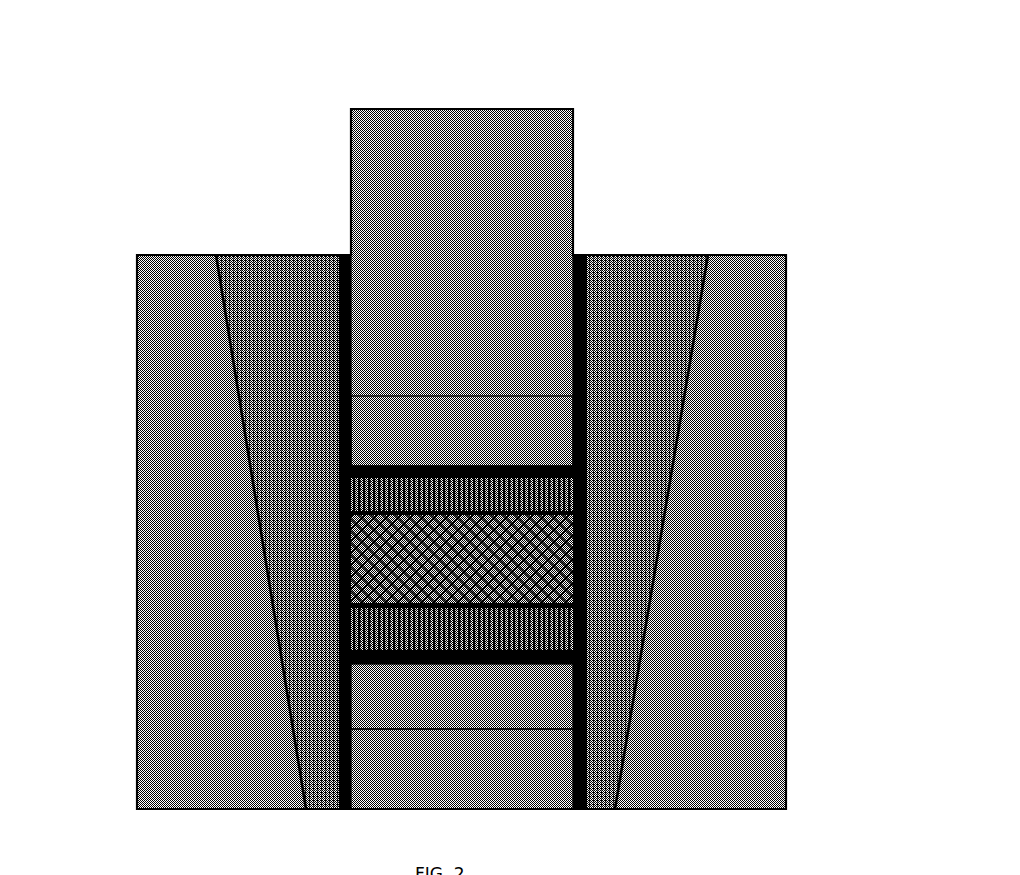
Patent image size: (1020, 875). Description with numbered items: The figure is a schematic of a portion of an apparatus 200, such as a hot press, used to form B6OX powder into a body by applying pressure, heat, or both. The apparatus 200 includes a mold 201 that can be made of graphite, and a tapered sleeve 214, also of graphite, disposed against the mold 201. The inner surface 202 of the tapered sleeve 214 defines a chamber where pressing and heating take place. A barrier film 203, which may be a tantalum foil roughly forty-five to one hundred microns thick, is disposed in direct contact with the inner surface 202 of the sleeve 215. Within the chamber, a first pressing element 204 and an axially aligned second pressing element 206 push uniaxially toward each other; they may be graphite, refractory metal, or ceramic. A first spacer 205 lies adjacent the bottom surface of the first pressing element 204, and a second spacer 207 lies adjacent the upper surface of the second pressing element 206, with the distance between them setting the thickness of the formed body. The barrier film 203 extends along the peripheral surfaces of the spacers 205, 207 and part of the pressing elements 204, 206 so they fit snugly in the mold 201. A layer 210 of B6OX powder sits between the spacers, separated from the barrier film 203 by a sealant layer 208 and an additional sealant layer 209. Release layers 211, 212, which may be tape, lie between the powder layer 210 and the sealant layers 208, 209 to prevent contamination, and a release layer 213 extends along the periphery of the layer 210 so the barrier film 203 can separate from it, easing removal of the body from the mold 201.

The apparatus 200 is at (222, 95).
The mold 201 is at (784, 392).
The inner surface 202 is at (582, 364).
The barrier film 203 is at (568, 462).
The first pressing element 204 is at (549, 197).
The first spacer 205 is at (540, 421).
The second pressing element 206 is at (540, 773).
The second spacer 207 is at (540, 696).
The sealant layer 208 is at (530, 488).
The additional sealant layer 209 is at (538, 622).
The layer of B6OX powder 210 is at (540, 548).
The release layer 211 is at (538, 512).
The release layer 212 is at (538, 600).
The release layer 213 is at (485, 564).
The tapered sleeve 214 is at (612, 303).
The sleeve 215 is at (684, 335).